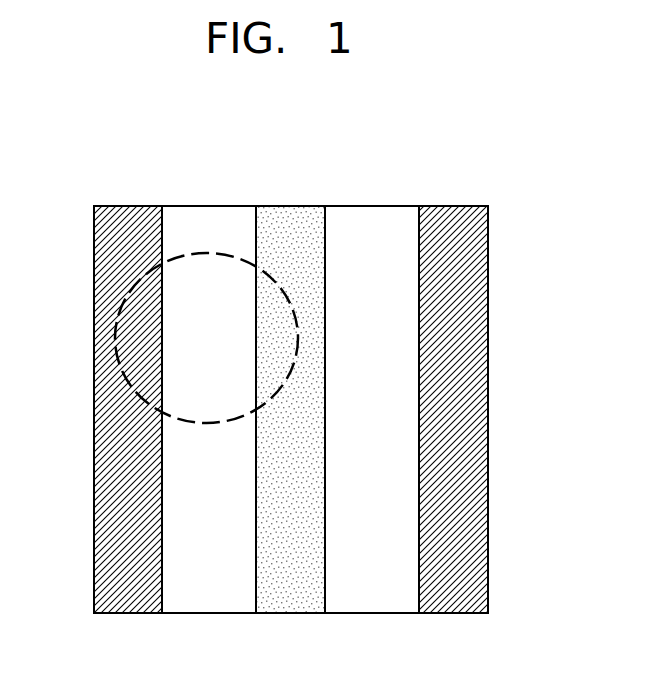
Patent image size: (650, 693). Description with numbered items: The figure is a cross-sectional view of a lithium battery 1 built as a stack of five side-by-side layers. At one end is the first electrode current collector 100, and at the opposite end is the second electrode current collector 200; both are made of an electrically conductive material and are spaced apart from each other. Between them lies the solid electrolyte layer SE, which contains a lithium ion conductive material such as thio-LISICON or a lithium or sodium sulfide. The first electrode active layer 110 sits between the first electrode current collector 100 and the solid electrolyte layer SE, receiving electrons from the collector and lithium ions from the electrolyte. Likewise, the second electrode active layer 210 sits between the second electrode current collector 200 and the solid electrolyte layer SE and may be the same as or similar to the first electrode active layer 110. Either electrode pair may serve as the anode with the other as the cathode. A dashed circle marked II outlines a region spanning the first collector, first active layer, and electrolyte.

The lithium battery 1 is at (530, 120).
The first electrode current collector 100 is at (125, 217).
The first electrode active layer 110 is at (210, 217).
The solid electrolyte layer SE is at (291, 217).
The second electrode active layer 210 is at (375, 217).
The second electrode current collector 200 is at (455, 217).
The enlarged region II is at (114, 343).